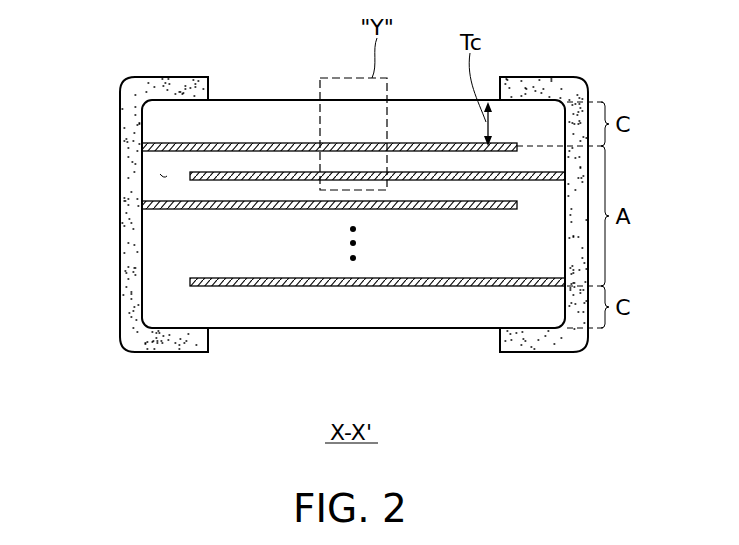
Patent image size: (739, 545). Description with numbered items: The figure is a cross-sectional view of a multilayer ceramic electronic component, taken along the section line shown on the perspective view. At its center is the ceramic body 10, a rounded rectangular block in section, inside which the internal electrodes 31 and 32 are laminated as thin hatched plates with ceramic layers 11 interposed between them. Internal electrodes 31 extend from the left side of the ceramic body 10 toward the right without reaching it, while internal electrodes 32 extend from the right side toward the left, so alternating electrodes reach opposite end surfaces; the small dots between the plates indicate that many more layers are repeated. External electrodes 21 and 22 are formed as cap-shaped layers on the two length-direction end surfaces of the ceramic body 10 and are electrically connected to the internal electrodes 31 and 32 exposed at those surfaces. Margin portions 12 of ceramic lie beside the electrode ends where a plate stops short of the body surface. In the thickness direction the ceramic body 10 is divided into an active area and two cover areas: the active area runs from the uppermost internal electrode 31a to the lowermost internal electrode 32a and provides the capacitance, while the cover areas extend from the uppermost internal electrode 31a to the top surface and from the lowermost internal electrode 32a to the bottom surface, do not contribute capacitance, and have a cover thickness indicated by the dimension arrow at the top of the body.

The ceramic body 10 is at (302, 208).
The ceramic layers 11 is at (215, 196).
The margin portions 12 is at (165, 174).
The external electrode 21 is at (178, 342).
The external electrode 22 is at (532, 342).
The internal electrode 31 is at (241, 200).
The internal electrode 32 is at (283, 172).
The uppermost internal electrode 31a is at (142, 145).
The lowermost internal electrode 32a is at (190, 282).